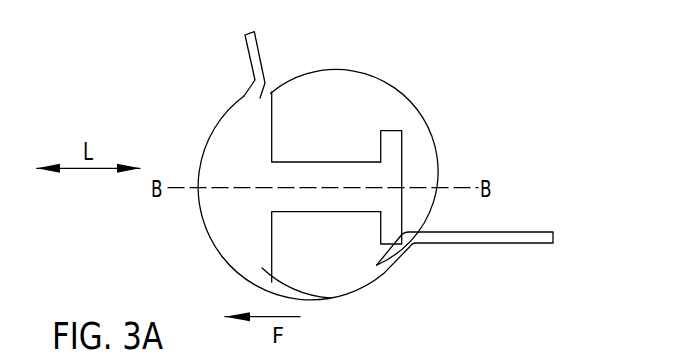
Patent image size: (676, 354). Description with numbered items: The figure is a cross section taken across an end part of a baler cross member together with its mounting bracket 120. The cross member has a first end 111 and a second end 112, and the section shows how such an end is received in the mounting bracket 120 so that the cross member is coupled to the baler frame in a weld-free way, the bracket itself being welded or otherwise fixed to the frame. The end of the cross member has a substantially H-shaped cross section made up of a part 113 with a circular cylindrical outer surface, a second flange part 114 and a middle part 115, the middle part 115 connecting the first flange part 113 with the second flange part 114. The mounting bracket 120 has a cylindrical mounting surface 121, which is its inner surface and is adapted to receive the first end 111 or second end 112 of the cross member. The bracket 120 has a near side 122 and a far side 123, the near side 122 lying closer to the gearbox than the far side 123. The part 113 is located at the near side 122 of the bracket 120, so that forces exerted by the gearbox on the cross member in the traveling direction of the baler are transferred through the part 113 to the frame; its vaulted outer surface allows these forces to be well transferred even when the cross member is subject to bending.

The first end 111 is at (349, 192).
The second end 112 is at (349, 192).
The part having a circular cylindrical outer surface 113 is at (243, 222).
The second flange part 114 is at (390, 153).
The middle part 115 is at (309, 174).
The mounting bracket 120 is at (502, 285).
The cylindrical mounting surface 121 is at (337, 297).
The near side 122 is at (207, 145).
The far side 123 is at (397, 265).